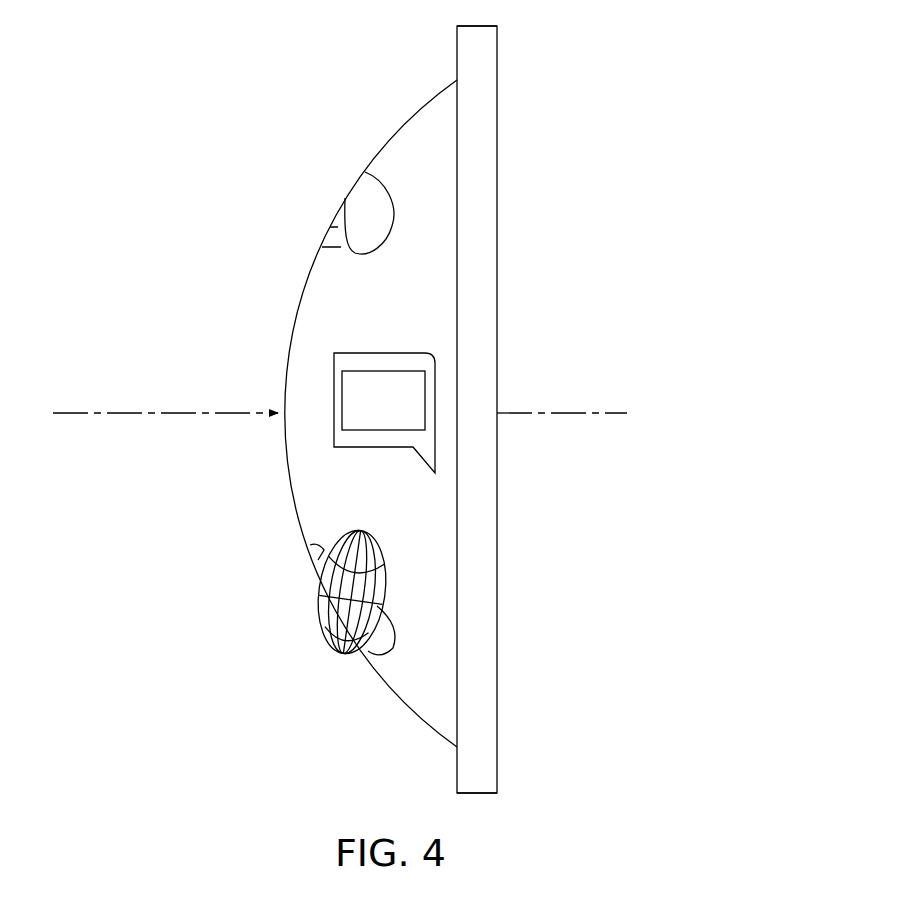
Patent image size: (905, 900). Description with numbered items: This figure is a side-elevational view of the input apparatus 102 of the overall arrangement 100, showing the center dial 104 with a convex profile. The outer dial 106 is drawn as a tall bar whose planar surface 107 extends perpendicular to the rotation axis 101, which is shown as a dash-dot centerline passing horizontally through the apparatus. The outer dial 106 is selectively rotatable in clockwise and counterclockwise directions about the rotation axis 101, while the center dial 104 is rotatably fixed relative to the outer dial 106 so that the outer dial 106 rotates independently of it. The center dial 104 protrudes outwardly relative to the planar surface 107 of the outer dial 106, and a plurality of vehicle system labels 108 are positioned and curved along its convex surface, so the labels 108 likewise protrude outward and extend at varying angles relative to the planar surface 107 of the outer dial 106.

The display system 100 is at (116, 120).
The rotation axis 101 is at (612, 412).
The input apparatus 102 is at (235, 168).
The center dial 104 is at (308, 341).
The outer dial 106 is at (497, 57).
The planar surface 107 is at (456, 48).
The vehicle system labels 108 is at (356, 193).